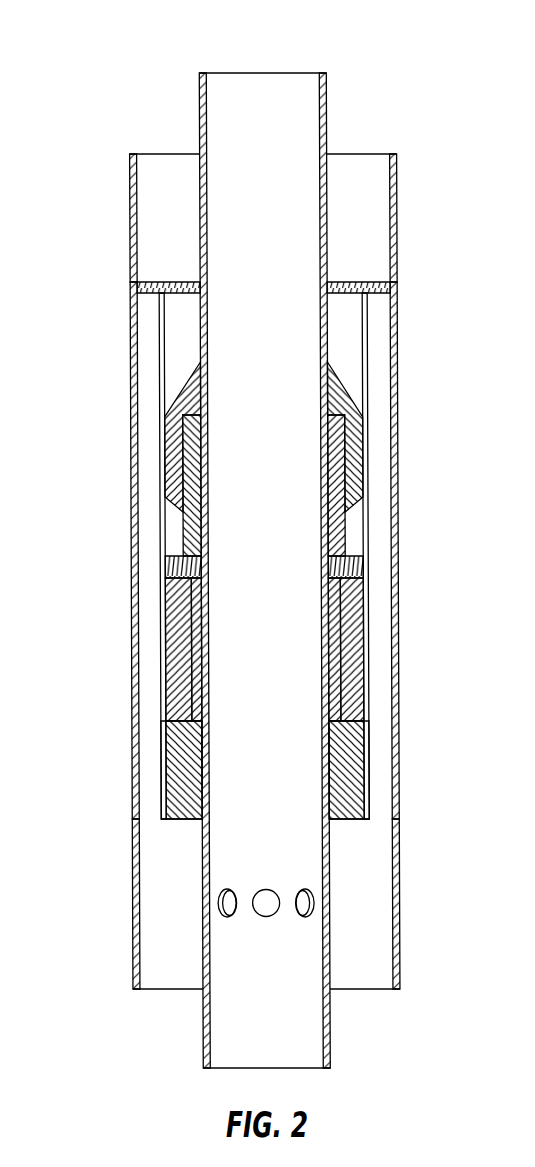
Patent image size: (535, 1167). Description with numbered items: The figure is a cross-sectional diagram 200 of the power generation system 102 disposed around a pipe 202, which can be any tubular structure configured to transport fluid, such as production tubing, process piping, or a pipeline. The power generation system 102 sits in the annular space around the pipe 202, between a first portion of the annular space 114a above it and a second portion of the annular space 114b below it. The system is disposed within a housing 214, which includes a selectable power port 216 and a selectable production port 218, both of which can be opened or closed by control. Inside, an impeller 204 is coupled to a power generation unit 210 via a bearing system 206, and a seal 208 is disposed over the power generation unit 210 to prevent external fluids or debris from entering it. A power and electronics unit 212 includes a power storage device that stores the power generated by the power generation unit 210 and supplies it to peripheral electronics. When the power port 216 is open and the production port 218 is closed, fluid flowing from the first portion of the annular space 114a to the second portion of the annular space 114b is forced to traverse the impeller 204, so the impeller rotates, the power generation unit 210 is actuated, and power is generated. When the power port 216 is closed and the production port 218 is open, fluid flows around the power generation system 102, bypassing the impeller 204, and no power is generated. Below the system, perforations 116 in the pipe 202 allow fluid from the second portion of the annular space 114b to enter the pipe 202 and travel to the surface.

The cross-sectional diagram 200 is at (378, 50).
The pipe 202 is at (304, 123).
The first portion of the annular space 114a is at (157, 222).
The second portion of the annular space 114b is at (157, 903).
The selectable power port 216 is at (343, 280).
The selectable production port 218 is at (400, 287).
The power generation system 102 is at (178, 391).
The impeller 204 is at (338, 399).
The bearing system 206 is at (338, 470).
The seal element 208 is at (362, 565).
The power generation unit 210 is at (352, 635).
The power and electronics unit 212 is at (352, 750).
The housing 214 is at (162, 650).
The perforations 116 is at (264, 917).